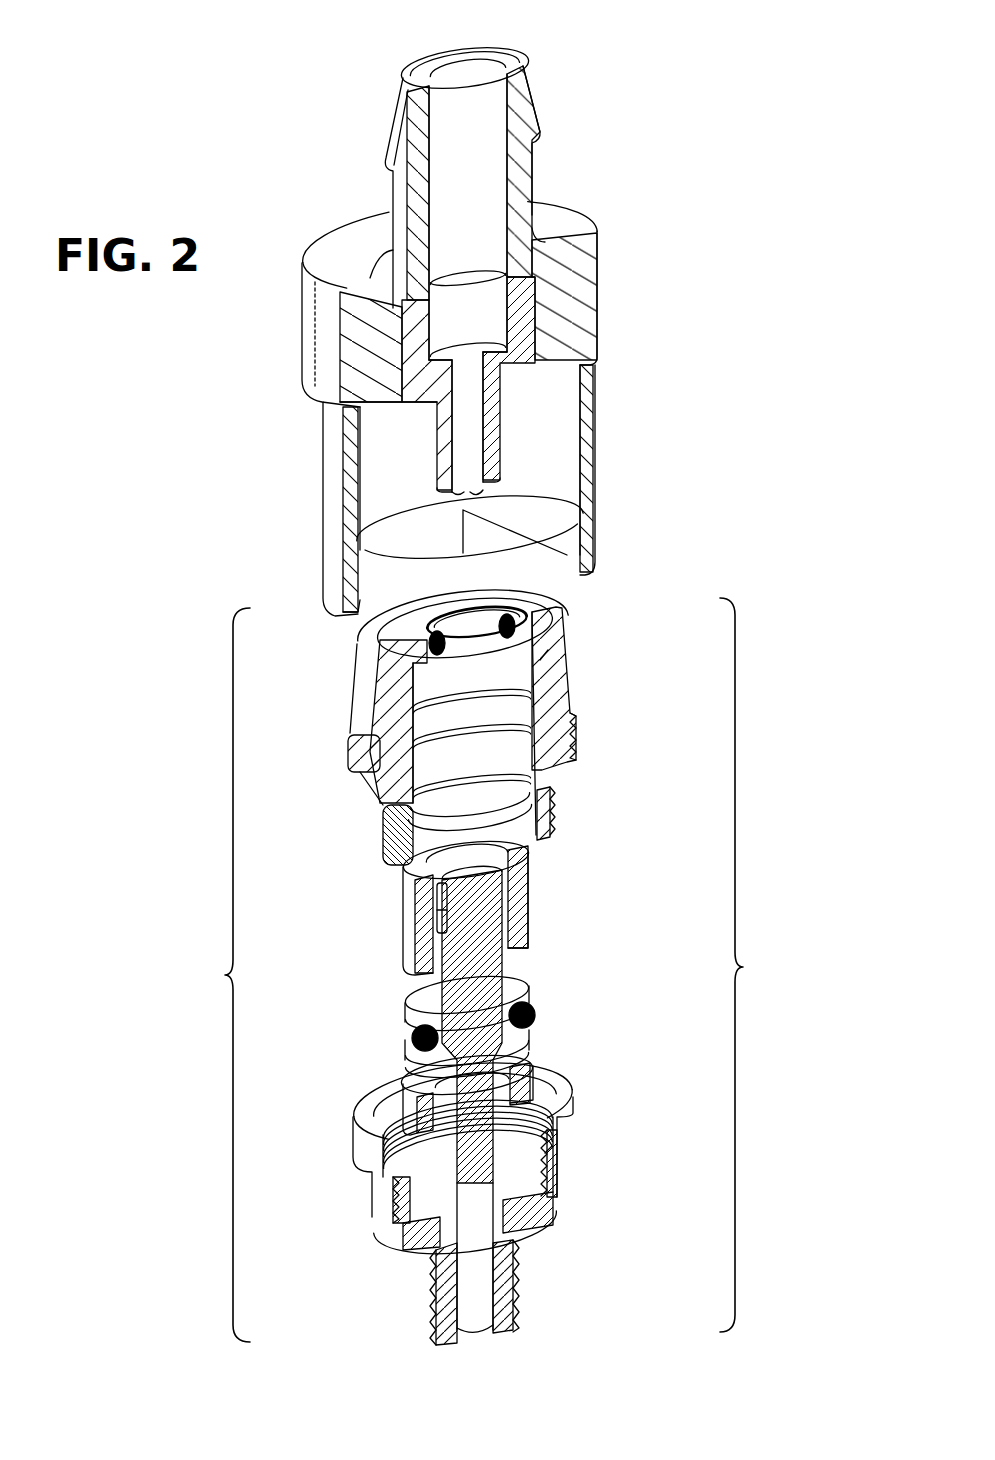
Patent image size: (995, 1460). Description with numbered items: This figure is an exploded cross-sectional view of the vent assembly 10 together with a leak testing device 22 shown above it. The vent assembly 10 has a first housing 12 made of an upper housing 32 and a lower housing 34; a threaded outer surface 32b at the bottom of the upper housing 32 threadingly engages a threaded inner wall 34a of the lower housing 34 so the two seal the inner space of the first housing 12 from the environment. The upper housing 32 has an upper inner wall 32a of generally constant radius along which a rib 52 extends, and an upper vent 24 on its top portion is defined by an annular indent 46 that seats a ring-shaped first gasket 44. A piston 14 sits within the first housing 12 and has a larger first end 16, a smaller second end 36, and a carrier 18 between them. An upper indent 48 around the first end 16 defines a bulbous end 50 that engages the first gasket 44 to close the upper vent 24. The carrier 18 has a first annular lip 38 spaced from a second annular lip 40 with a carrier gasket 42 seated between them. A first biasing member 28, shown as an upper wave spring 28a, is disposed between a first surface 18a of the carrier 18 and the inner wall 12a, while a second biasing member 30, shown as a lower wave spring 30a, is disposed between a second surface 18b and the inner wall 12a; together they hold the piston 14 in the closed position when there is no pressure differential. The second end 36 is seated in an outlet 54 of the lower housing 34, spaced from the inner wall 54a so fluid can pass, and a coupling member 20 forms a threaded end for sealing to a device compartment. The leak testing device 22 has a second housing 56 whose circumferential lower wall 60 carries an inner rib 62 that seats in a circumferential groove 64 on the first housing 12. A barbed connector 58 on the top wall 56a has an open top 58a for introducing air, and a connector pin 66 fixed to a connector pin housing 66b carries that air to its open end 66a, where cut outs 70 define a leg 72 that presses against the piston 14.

The vent assembly 10 is at (223, 975).
The first housing 12 is at (750, 965).
The inner wall 12a is at (546, 901).
The piston 14 is at (540, 978).
The first end 16 is at (497, 940).
The carrier 18 is at (550, 1005).
The first surface 18a is at (417, 1000).
The second surface 18b is at (517, 1047).
The coupling member 20 is at (532, 1277).
The leak testing device 22 is at (640, 176).
The upper vent 24 is at (520, 603).
The first biasing member 28 is at (530, 867).
The upper wave spring 28a is at (465, 859).
The second biasing member 30 is at (517, 1070).
The lower wave spring 30a is at (466, 1075).
The upper housing 32 is at (330, 718).
The upper inner wall 32a is at (520, 658).
The threaded outer surface 32b is at (380, 823).
The lower housing 34 is at (350, 1212).
The threaded inner wall 34a is at (545, 1153).
The second end 36 is at (503, 1137).
The first annular lip 38 is at (413, 1010).
The second annular lip 40 is at (405, 1063).
The carrier gasket 42 is at (386, 1035).
The first gasket 44 is at (467, 618).
The annular indent 46 is at (510, 627).
The upper indent 48 is at (440, 913).
The bulbous end 50 is at (440, 890).
The rib 52 is at (567, 753).
The outlet 54 is at (470, 1345).
The inner wall of the outlet 54a is at (457, 1290).
The second housing 56 is at (598, 272).
The top wall 56a is at (345, 257).
The connector 58 is at (540, 108).
The open top 58a is at (466, 50).
The circumferential lower wall 60 is at (595, 449).
The inner rib 62 is at (342, 610).
The circumferential groove 64 is at (352, 757).
The connector pin 66 is at (585, 407).
The open end 66a is at (467, 477).
The connector pin housing 66b is at (520, 324).
The cut outs 70 is at (460, 497).
The leg 72 is at (477, 497).